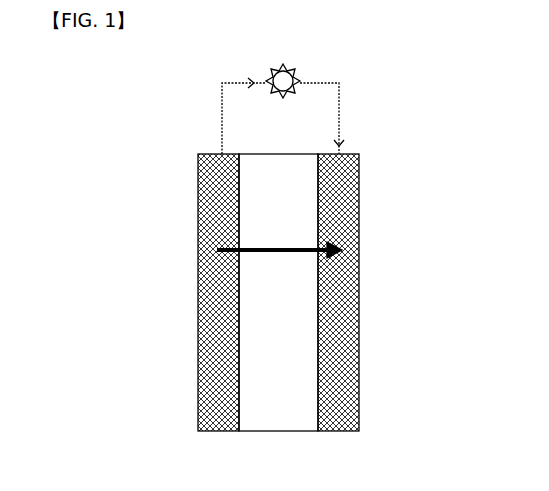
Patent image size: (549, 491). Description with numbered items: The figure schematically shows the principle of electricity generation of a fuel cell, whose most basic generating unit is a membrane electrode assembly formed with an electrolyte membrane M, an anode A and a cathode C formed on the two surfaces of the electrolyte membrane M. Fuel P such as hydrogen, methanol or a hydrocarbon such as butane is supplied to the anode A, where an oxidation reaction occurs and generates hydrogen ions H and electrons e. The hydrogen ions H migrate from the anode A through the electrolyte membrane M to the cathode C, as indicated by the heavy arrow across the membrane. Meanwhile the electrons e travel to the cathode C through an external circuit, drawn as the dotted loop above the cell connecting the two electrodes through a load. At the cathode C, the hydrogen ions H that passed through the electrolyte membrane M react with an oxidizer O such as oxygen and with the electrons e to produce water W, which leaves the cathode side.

The anode A is at (220, 431).
The electrolyte membrane M is at (280, 431).
The cathode C is at (343, 431).
The fuel (petroleum/reactant) feed P is at (190, 281).
The oxidizer O is at (368, 281).
The water W is at (368, 321).
The hydrogen ions H is at (279, 261).
The electrons e is at (278, 117).